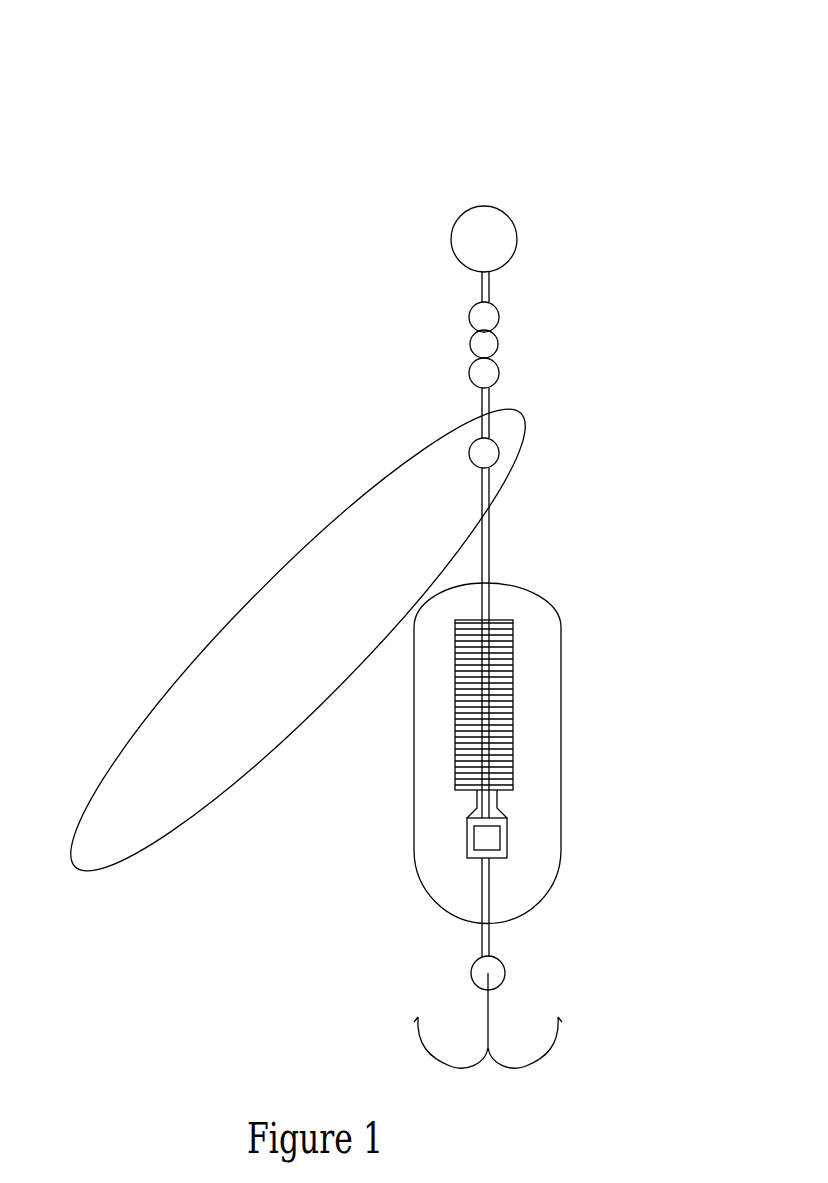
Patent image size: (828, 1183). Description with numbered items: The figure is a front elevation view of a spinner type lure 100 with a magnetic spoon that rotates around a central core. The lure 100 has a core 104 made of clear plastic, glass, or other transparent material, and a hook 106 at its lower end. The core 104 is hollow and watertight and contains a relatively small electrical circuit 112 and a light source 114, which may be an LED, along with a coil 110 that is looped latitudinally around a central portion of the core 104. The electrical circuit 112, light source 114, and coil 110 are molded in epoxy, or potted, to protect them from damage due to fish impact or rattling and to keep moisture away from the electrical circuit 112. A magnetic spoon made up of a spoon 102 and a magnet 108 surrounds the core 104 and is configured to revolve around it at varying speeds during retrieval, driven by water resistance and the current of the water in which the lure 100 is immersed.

The spinner type lure 100 is at (463, 212).
The spoon 102 is at (298, 640).
The magnet 108 is at (357, 502).
The core 104 is at (543, 603).
The hook 106 is at (559, 1018).
The coil 110 is at (513, 750).
The electrical circuit 112 is at (507, 835).
The light source 114 is at (473, 838).